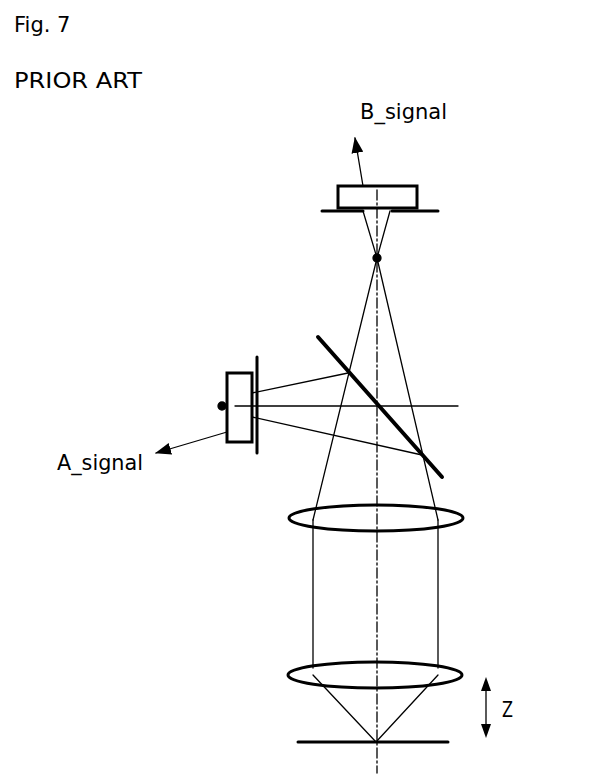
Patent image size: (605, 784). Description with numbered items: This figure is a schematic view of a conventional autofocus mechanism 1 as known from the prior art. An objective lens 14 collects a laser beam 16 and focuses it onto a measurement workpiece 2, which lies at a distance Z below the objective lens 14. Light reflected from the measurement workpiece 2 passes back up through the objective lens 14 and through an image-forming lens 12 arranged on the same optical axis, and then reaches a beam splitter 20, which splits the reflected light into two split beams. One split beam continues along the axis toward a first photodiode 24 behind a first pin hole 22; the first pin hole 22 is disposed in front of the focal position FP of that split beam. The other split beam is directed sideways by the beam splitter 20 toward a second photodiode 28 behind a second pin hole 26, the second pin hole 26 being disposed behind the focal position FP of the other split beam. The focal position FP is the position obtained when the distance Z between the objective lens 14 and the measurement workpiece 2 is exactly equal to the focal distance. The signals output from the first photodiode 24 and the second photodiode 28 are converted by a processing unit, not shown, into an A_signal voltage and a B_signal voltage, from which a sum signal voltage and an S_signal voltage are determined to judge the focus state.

The autofocus mechanism 1 is at (491, 262).
The workpiece 2 is at (430, 742).
The image-forming lens 12 is at (452, 508).
The objective lens 14 is at (458, 668).
The laser beam 16 is at (343, 709).
The beam splitter 20 is at (433, 467).
The first pin hole 22 is at (259, 366).
The first photodiode 24 is at (248, 380).
The second pin hole 26 is at (438, 211).
The second photodiode 28 is at (403, 186).
The focal position FP is at (387, 256).